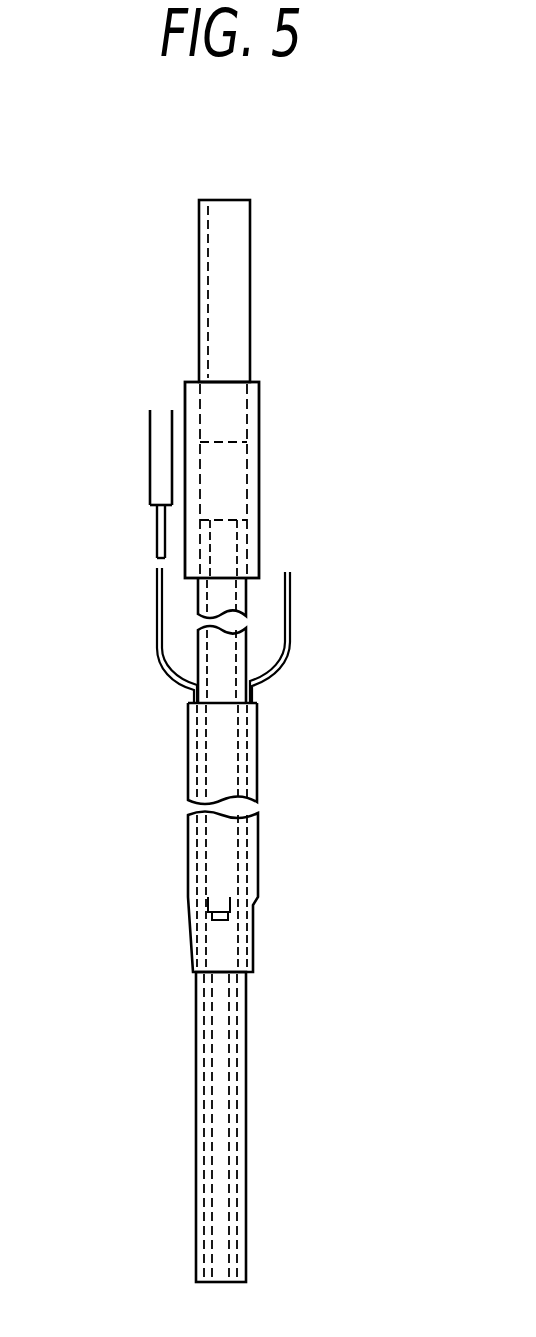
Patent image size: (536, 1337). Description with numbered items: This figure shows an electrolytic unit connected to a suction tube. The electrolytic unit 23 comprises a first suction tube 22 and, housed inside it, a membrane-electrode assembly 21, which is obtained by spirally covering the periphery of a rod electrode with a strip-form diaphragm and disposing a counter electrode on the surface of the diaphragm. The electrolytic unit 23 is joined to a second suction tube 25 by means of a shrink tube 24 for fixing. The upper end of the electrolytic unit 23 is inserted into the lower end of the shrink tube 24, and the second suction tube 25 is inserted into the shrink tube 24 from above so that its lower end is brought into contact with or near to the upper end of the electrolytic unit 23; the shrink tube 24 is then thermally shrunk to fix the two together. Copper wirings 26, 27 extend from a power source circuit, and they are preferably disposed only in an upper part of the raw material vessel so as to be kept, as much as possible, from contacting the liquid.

The membrane-electrode assembly 21 is at (195, 1013).
The first suction tube 22 is at (196, 1145).
The electrolytic unit 23 is at (253, 1082).
The shrink tube for fixing 24 is at (168, 703).
The second suction tube 25 is at (333, 205).
The copper wiring 26 is at (158, 600).
The copper wiring 27 is at (283, 646).